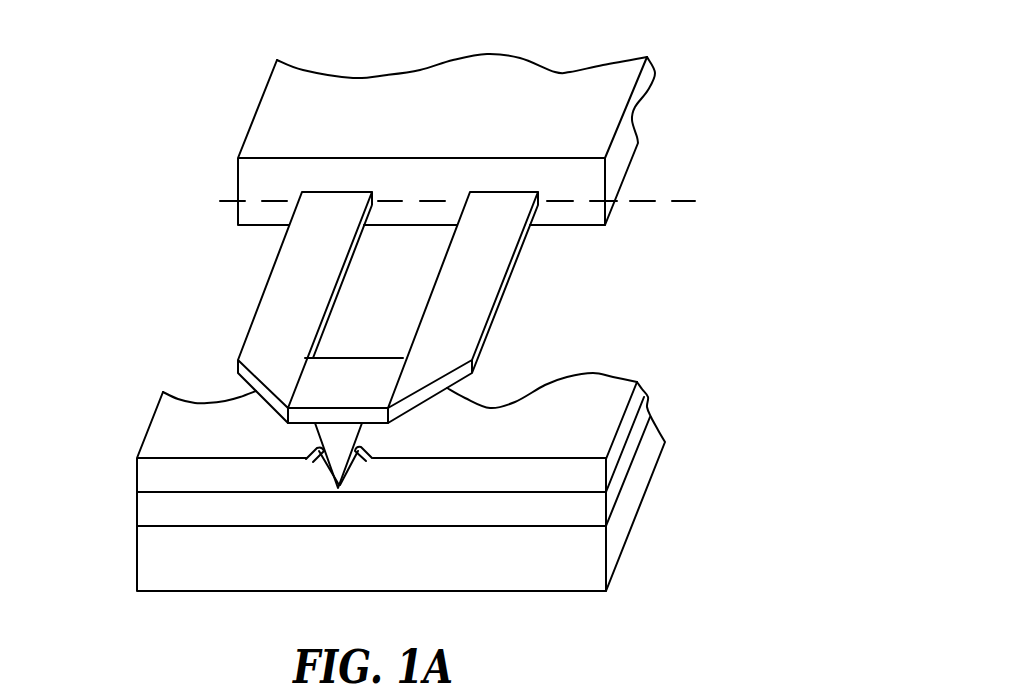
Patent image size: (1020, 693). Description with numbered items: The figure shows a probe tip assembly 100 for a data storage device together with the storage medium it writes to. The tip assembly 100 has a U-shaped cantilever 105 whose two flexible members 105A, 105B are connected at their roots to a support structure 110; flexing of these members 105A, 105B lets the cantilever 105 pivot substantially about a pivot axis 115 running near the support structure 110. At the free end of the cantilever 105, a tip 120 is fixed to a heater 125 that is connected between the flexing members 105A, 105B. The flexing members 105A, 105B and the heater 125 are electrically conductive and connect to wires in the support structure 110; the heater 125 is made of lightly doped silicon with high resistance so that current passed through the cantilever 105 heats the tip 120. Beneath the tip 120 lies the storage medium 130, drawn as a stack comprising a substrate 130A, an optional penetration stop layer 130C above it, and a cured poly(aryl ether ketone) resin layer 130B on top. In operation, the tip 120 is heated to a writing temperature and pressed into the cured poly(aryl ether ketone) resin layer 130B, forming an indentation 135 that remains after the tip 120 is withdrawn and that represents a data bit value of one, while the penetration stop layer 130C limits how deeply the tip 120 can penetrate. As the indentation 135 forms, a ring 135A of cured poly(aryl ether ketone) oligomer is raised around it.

The tip assembly 100 is at (702, 284).
The cantilever 105 is at (340, 303).
The flexible member 105A is at (323, 312).
The flexible member 105B is at (488, 312).
The support structure 110 is at (506, 144).
The pivot axis 115 is at (680, 201).
The tip 120 is at (337, 443).
The heater 125 is at (358, 402).
The storage medium 130 is at (413, 482).
The substrate 130A is at (515, 578).
The cured poly(aryl ether ketone) resin layer 130B is at (588, 477).
The penetration stop layer 130C is at (587, 508).
The indentation 135 is at (347, 463).
The ring 135A is at (363, 452).